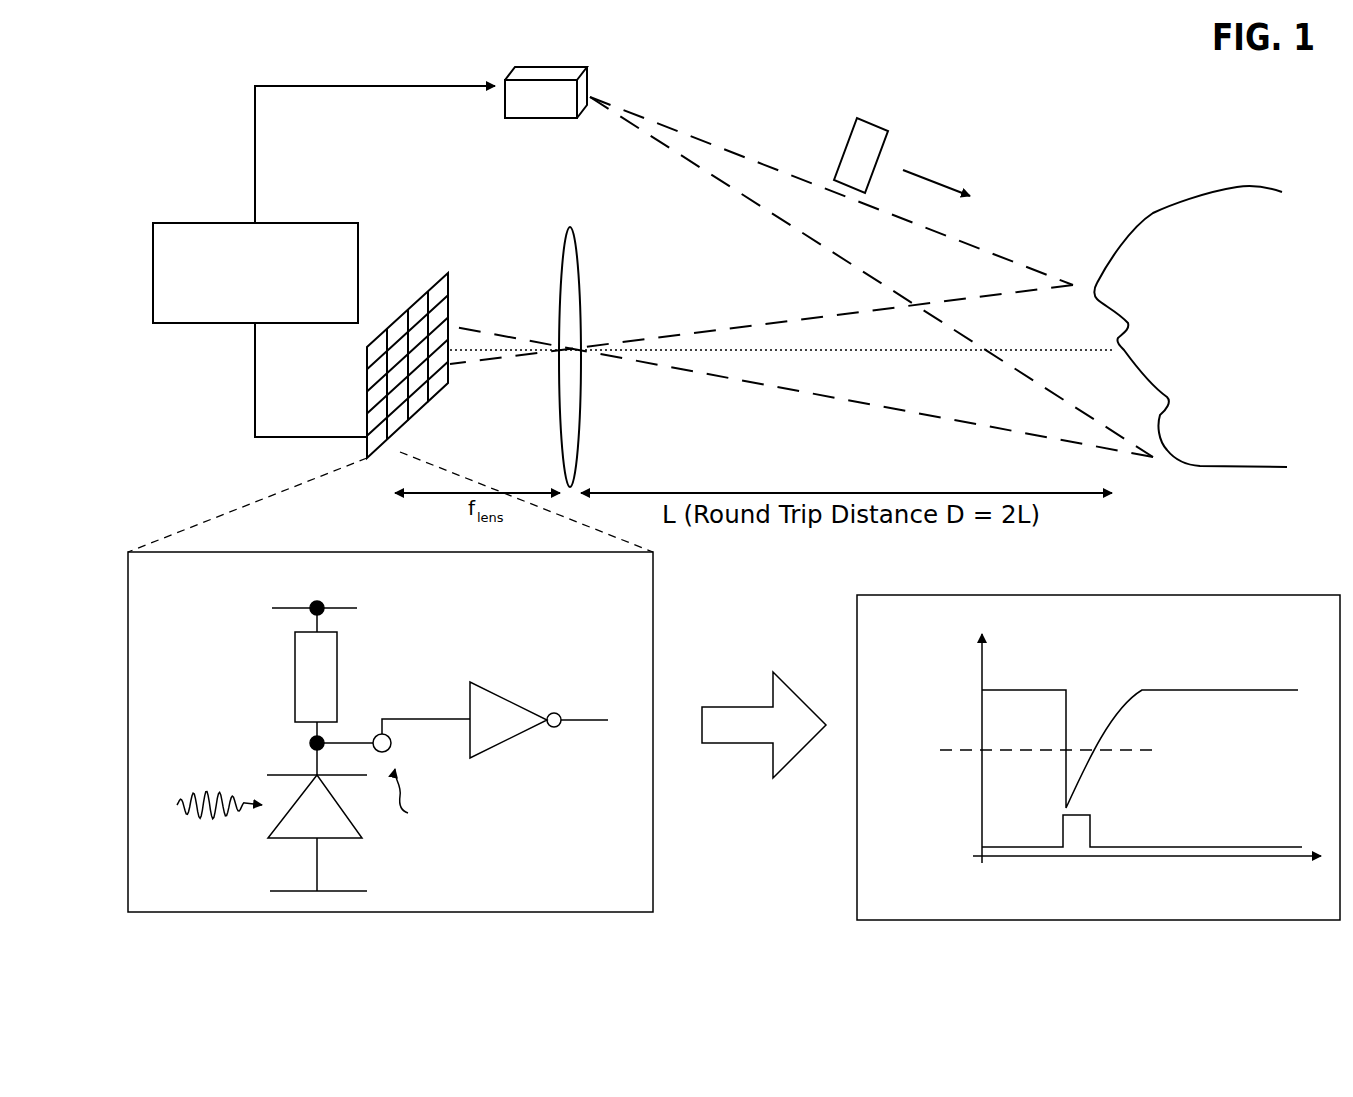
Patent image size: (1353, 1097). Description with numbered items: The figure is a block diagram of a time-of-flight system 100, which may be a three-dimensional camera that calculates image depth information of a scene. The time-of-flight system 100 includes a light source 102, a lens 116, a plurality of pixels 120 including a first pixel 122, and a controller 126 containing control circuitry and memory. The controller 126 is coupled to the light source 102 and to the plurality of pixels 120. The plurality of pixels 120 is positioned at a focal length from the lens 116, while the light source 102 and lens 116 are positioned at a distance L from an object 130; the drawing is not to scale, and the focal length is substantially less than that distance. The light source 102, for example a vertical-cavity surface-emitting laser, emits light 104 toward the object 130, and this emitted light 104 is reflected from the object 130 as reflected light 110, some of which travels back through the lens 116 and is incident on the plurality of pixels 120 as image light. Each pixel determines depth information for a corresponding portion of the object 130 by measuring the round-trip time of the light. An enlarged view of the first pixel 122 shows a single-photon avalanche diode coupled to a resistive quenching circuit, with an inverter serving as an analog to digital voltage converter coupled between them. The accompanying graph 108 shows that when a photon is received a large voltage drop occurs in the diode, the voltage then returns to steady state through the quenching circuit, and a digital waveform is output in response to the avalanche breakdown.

The time-of-flight system 100 is at (288, 47).
The light source 102 is at (597, 70).
The emitted light 104 is at (871, 275).
The graph 108 is at (1322, 627).
The reflected light 110 is at (801, 368).
The lens 116 is at (569, 228).
The plurality of pixels 120 is at (373, 463).
The first pixel 122 is at (436, 271).
The controller 126 is at (225, 323).
The object 130 is at (1172, 207).